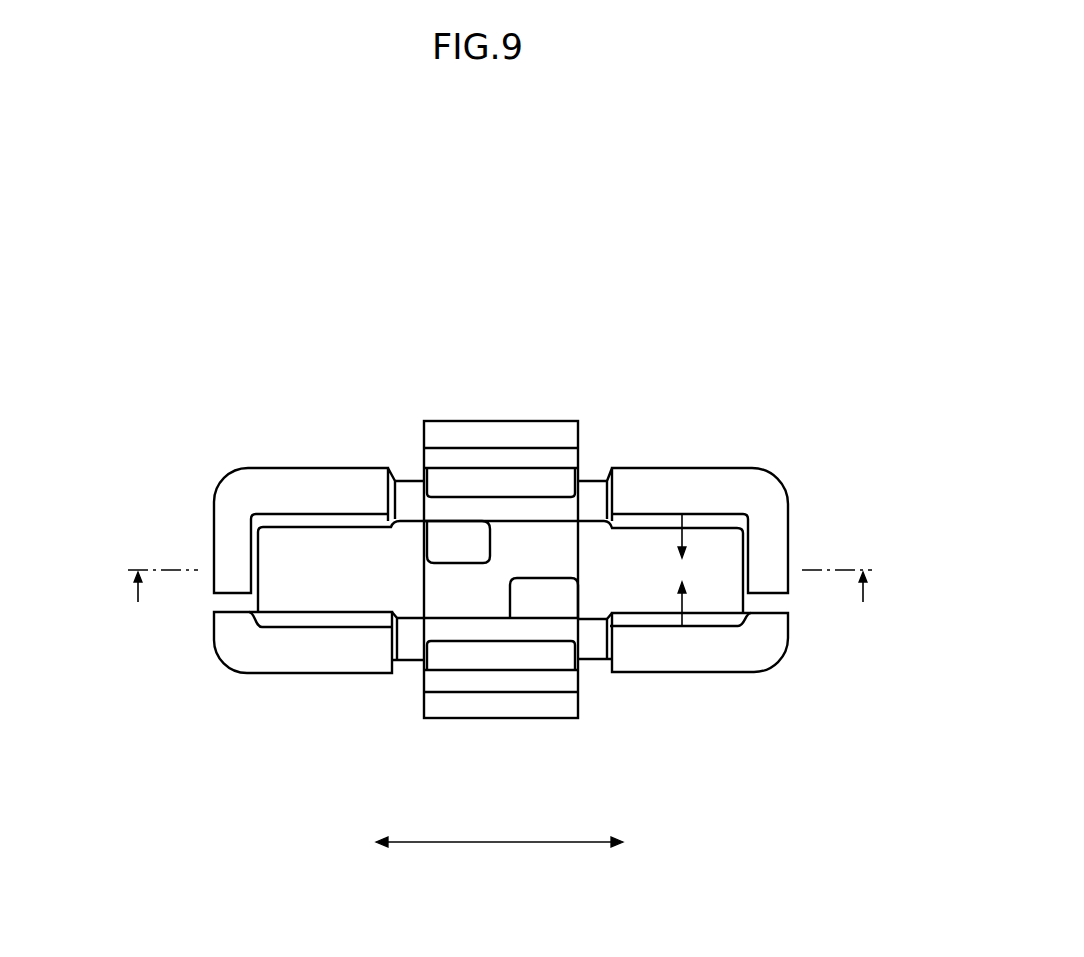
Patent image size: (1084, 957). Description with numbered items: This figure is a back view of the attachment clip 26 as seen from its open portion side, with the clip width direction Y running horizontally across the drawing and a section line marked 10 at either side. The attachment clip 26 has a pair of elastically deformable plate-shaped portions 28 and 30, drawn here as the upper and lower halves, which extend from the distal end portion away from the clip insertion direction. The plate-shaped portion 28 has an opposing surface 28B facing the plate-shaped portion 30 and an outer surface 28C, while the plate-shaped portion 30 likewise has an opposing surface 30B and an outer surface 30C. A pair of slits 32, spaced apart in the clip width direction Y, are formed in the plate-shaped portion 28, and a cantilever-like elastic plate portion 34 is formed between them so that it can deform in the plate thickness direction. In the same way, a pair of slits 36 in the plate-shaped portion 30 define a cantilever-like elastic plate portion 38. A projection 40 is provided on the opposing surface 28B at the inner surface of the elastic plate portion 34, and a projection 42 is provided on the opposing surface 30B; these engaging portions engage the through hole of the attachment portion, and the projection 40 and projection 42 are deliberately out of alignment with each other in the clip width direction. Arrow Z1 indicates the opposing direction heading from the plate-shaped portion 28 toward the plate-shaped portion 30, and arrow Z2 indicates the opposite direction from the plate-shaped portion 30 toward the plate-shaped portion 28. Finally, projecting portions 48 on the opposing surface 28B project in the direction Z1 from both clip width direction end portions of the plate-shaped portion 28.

The section line / viewing direction 10 is at (500, 589).
The attachment clip 26 is at (491, 559).
The plate-shaped portion 28 is at (491, 494).
The opposing surface 28B is at (292, 516).
The outer surface 28C is at (315, 466).
The plate-shaped portion 30 is at (480, 700).
The opposing surface 30B is at (302, 620).
The outer surface 30C is at (293, 676).
The slits 32 is at (399, 497).
The elastic plate portion 34 is at (497, 418).
The slits 36 is at (408, 662).
The elastic plate portion 38 is at (503, 723).
The projection 40 is at (452, 568).
The projection 42 is at (549, 570).
The projecting portions 48 is at (213, 542).
The opposing direction of the plate-shaped portion 28 Z1 is at (683, 537).
The opposing direction of the plate-shaped portion 30 Z2 is at (683, 602).
The clip width direction Y is at (493, 843).